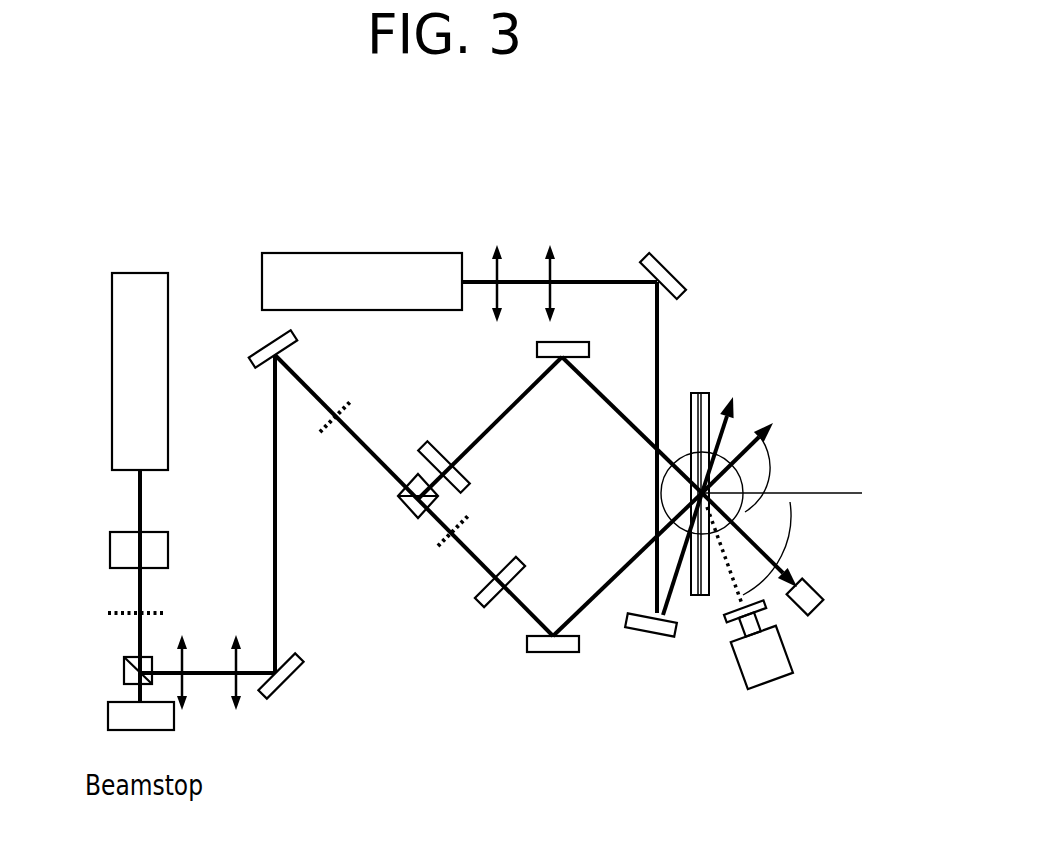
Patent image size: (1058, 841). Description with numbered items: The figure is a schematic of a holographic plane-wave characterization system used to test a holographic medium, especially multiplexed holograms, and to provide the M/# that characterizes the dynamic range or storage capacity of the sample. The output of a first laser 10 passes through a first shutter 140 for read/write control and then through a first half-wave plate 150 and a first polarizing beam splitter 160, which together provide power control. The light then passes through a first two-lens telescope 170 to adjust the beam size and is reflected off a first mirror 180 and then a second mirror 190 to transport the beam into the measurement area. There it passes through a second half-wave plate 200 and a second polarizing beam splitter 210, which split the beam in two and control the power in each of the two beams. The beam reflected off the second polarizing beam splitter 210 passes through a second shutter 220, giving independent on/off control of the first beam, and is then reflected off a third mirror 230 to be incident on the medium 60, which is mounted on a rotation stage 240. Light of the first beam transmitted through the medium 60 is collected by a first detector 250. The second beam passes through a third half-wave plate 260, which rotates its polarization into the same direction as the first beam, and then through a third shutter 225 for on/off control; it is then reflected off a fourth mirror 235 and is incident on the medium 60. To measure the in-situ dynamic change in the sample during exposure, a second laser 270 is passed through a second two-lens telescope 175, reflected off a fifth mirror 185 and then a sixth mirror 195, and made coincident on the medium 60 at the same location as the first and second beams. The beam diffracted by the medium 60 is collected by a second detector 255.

The first laser 10 is at (112, 438).
The medium 60 is at (699, 597).
The first shutter 140 is at (110, 545).
The first half-wave plate 150 is at (118, 612).
The first polarizing beam splitter 160 is at (124, 667).
The first two-lens telescope 170 is at (233, 664).
The second two-lens telescope 175 is at (548, 276).
The first mirror 180 is at (294, 690).
The fifth mirror 185 is at (667, 262).
The second mirror 190 is at (258, 340).
The sixth mirror 195 is at (643, 633).
The second half-wave plate 200 is at (323, 436).
The second polarizing beam splitter 210 is at (398, 497).
The second shutter 220 is at (434, 445).
The third shutter 225 is at (476, 600).
The third mirror 230 is at (537, 350).
The fourth mirror 235 is at (555, 653).
The rotation stage 240 is at (790, 502).
The first detector 250 is at (822, 611).
The second detector 255 is at (782, 681).
The third half-wave plate 260 is at (440, 548).
The second laser 270 is at (393, 253).